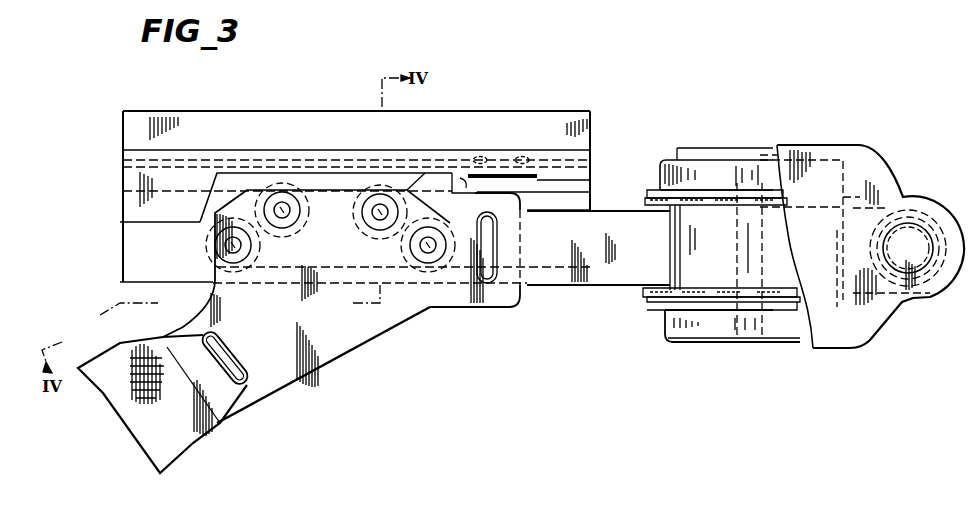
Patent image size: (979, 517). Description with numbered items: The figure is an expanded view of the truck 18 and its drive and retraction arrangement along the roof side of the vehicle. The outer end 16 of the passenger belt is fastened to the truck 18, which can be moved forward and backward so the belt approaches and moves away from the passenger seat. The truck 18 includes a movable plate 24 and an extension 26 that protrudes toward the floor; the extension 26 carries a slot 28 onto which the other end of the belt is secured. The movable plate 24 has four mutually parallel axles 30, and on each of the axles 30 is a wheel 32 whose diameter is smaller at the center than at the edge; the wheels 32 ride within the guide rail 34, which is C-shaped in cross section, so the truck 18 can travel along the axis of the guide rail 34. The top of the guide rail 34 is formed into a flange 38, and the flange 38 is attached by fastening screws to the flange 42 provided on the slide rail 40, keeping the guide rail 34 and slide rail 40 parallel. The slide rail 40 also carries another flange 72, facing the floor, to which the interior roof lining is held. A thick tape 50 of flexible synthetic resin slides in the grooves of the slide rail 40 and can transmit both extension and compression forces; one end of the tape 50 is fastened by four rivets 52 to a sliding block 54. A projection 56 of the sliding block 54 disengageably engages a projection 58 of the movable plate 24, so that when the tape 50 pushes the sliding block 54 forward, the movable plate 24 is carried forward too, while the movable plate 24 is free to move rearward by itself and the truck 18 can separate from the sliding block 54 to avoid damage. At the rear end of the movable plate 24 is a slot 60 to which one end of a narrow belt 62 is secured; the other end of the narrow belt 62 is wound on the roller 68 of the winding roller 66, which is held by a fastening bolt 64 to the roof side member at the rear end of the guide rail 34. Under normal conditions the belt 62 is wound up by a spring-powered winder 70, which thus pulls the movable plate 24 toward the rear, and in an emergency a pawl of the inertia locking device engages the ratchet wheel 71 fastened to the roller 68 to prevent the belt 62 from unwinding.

The outer end 16 is at (187, 441).
The truck 18 is at (349, 366).
The movable plate 24 is at (503, 305).
The extension 26 is at (270, 388).
The slot 28 is at (237, 352).
The axles 30 is at (430, 252).
The wheels 32 is at (356, 228).
The guide rail 34 is at (125, 248).
The flange 38 is at (474, 123).
The slide rail 40 is at (218, 149).
The flange 42 is at (287, 122).
The thick tape 50 is at (317, 160).
The rivets 52 is at (523, 157).
The sliding block 54 is at (526, 182).
The projection 56 is at (464, 187).
The projection 58 is at (432, 183).
The slot 60 is at (487, 248).
The narrow belt 62 is at (607, 287).
The fastening bolt 64 is at (905, 238).
The winding roller 66 is at (688, 240).
The roller 68 is at (737, 258).
The spring-powered winder 70 is at (780, 343).
The ratchet wheel 71 is at (662, 293).
The flange 72 is at (152, 214).